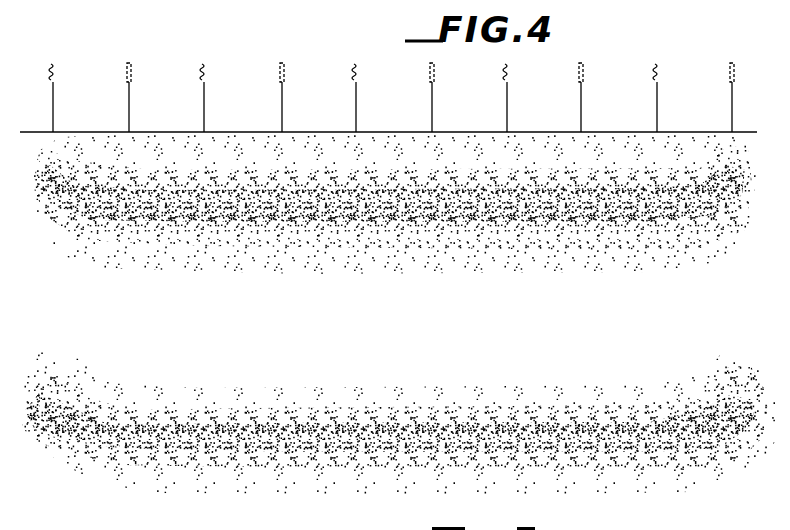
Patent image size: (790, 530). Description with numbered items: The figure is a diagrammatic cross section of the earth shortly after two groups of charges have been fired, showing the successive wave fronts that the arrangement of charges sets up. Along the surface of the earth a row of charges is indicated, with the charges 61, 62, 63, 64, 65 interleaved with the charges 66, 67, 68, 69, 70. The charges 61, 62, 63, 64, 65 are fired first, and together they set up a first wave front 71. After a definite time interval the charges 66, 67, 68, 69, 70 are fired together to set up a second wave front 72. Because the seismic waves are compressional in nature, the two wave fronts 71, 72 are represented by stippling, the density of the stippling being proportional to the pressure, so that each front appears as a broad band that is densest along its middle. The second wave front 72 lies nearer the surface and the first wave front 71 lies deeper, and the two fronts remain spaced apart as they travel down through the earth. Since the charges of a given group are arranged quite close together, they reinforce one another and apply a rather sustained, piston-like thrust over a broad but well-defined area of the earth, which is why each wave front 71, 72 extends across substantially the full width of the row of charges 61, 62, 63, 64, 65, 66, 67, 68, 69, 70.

The charge 61 is at (132, 65).
The charge 62 is at (285, 67).
The charge 63 is at (435, 65).
The charge 64 is at (584, 66).
The charge 65 is at (735, 65).
The charge 66 is at (56, 69).
The charge 67 is at (207, 67).
The charge 68 is at (359, 68).
The charge 69 is at (510, 66).
The charge 70 is at (660, 67).
The wave front 71 is at (693, 445).
The second wave front 72 is at (678, 213).